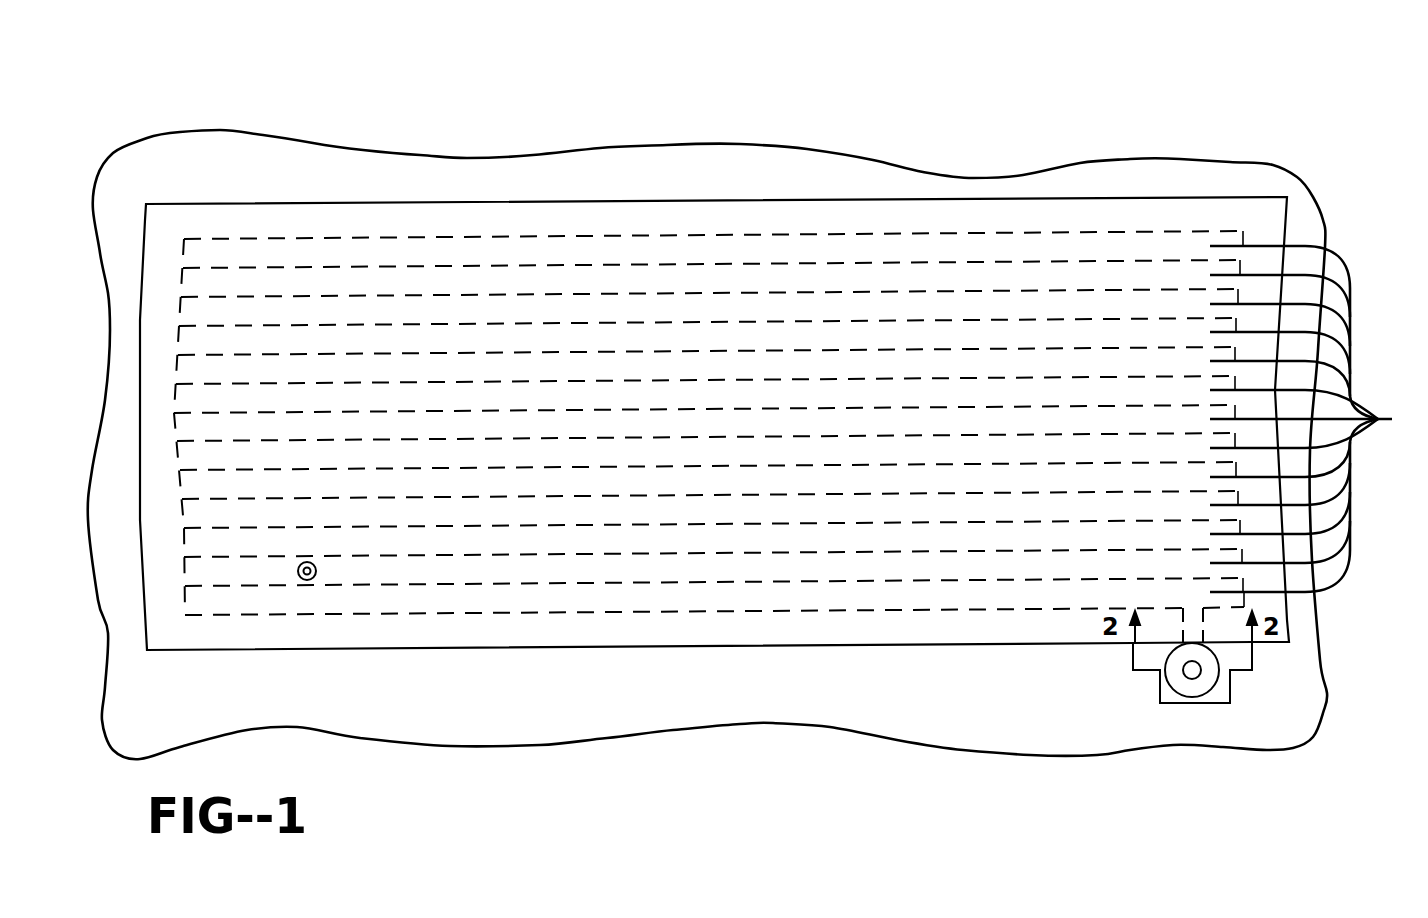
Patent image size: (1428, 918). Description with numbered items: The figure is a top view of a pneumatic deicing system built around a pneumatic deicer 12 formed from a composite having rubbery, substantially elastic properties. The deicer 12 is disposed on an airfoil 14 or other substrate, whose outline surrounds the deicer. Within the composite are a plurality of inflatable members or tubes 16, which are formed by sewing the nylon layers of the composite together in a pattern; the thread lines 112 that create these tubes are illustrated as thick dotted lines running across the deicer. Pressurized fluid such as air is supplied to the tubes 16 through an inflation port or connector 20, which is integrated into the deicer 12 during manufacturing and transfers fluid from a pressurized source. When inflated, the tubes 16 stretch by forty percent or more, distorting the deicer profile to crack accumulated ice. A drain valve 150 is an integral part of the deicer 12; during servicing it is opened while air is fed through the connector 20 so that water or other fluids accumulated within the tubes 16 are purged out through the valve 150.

The pneumatic deicer 12 is at (513, 144).
The airfoil 14 is at (300, 152).
The inflatable members or tubes 16 is at (1317, 419).
The inflation port or connector 20 is at (307, 580).
The thread lines 112 is at (575, 612).
The drain valve 150 is at (1187, 703).